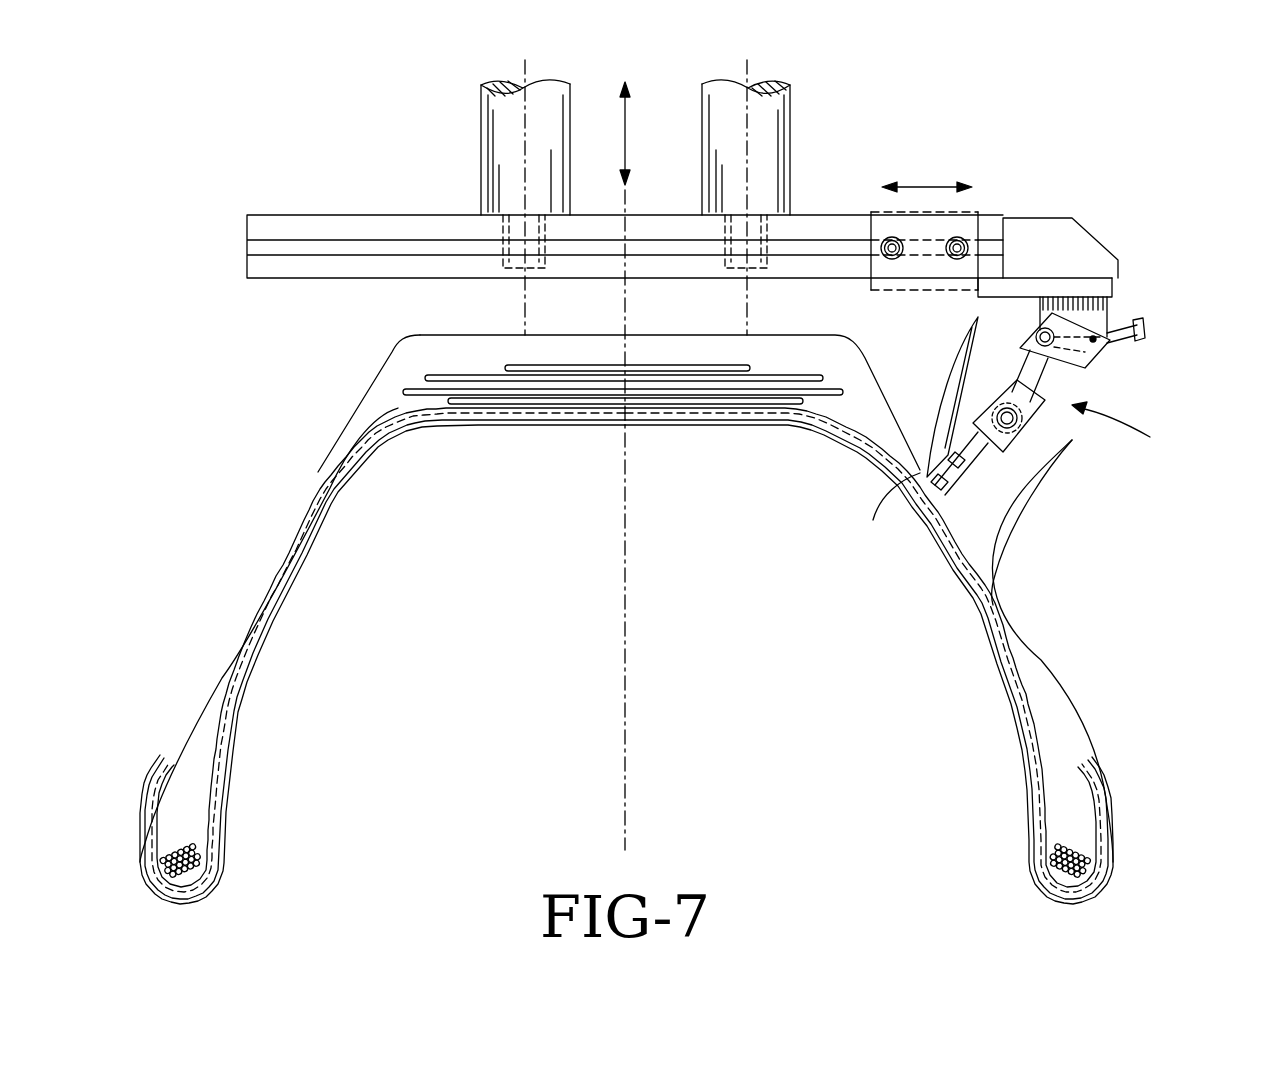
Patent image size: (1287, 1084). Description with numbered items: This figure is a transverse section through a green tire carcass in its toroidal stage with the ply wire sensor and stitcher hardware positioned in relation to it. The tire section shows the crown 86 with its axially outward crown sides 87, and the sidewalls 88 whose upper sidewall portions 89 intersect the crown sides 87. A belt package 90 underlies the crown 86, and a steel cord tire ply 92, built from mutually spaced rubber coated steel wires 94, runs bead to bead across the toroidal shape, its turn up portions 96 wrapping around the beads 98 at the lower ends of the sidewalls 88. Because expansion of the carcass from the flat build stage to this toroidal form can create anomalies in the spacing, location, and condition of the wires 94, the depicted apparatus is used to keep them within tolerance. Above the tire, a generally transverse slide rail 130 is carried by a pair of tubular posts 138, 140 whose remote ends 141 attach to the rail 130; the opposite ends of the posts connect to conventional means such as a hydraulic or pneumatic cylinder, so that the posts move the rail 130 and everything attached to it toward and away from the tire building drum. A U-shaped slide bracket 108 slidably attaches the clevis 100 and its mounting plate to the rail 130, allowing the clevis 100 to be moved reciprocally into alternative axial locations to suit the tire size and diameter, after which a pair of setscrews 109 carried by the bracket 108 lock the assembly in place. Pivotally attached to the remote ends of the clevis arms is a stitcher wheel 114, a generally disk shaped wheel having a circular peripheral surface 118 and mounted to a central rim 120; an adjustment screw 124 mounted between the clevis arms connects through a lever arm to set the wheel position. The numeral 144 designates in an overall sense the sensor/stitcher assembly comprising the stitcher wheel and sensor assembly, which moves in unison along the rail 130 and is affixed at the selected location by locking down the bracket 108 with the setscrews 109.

The crown 86 is at (475, 338).
The crown sides 87 is at (880, 392).
The sidewalls 88 is at (1060, 652).
The upper sidewall portions 89 is at (1040, 485).
The belt package 90 is at (540, 408).
The steel cord tire ply 92 is at (1005, 667).
The rubber coated steel wires 94 is at (983, 598).
The turn up portions 96 is at (1097, 806).
The beads 98 is at (1082, 861).
The clevis 100 is at (1100, 300).
The U-shaped slide bracket 108 is at (892, 225).
The setscrews 109 is at (957, 240).
The stitcher wheel 114 is at (923, 490).
The circular peripheral surface 118 is at (930, 470).
The central rim 120 is at (1062, 358).
The adjustment screw 124 is at (1145, 332).
The slide rail 130 is at (1070, 248).
The tubular post 138 is at (762, 128).
The tubular post 140 is at (490, 128).
The remote ends 141 is at (532, 252).
The sensor/stitcher assembly 144 is at (1138, 427).